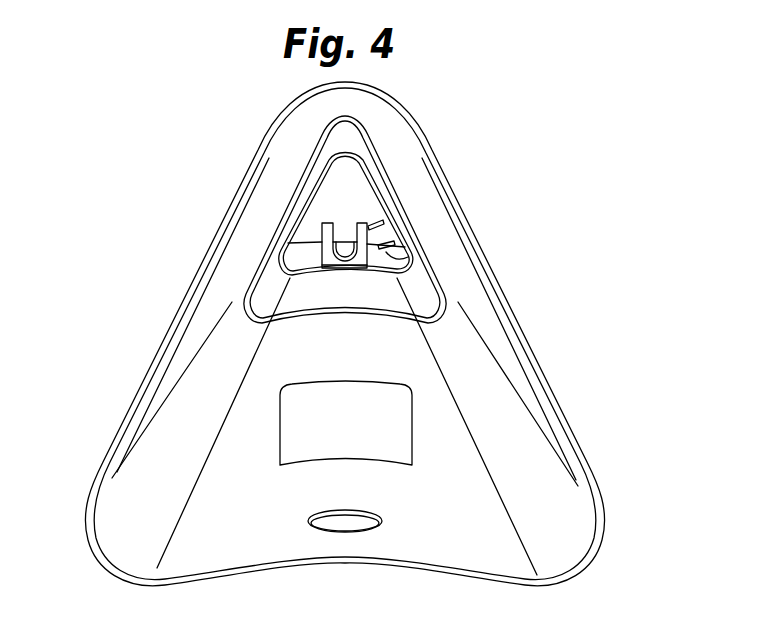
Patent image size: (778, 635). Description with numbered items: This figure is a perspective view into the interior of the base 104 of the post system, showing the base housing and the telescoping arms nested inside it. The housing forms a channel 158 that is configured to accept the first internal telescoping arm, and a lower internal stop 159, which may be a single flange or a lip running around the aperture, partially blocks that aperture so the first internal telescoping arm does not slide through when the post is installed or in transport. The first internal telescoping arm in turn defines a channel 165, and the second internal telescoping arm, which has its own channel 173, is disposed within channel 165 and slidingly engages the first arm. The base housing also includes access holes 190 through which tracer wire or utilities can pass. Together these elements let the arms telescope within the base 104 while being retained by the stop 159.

The base 104 is at (143, 533).
The channel 158 is at (452, 530).
The lower internal stop 159 is at (412, 252).
The channel 165 is at (425, 306).
The channel 173 is at (310, 258).
The access holes 190 is at (338, 525).